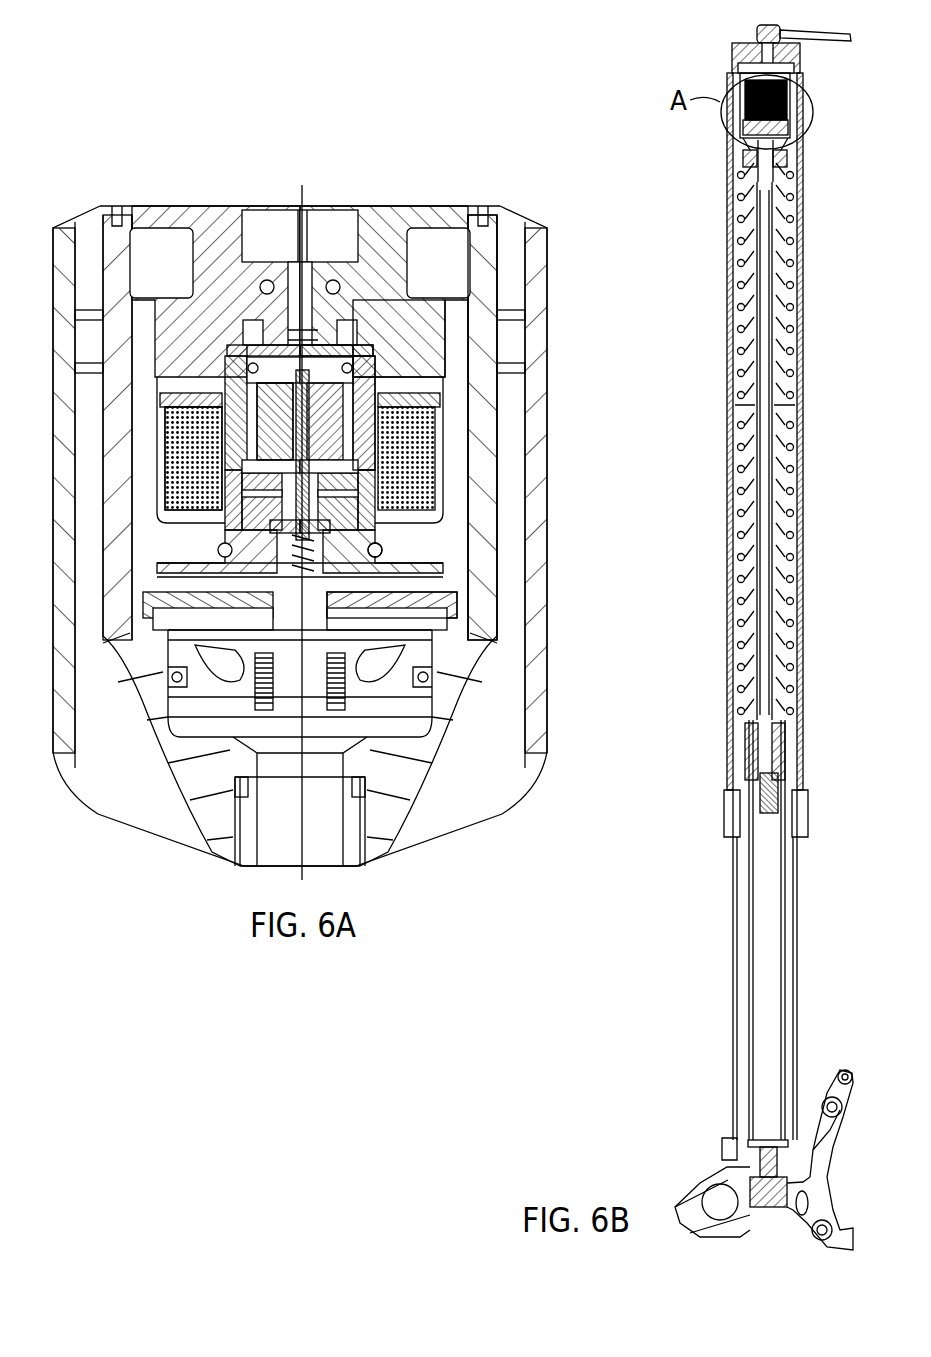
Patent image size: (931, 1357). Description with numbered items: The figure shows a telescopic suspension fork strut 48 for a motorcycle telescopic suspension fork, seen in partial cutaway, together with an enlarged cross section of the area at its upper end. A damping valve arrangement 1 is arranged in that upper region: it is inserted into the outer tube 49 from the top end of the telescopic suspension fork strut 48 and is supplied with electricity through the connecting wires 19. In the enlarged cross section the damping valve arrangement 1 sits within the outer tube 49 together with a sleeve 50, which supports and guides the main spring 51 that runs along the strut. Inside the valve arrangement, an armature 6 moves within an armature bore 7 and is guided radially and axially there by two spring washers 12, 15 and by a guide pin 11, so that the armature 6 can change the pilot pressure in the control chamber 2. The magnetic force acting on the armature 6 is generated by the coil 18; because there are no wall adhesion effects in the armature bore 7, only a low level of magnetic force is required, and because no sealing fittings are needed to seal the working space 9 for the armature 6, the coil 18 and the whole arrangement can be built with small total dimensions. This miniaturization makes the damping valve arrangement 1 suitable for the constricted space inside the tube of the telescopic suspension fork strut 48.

In FIG. 6B, the damping valve arrangement 1 is at (710, 150).
In FIG. 6A, the control chamber 2 is at (440, 612).
In FIG. 6A, the armature 6 is at (372, 392).
In FIG. 6A, the armature bore 7 is at (250, 385).
In FIG. 6A, the working space 9 is at (340, 352).
In FIG. 6A, the guide pin 11 is at (197, 453).
In FIG. 6A, the spring washer 12 is at (367, 548).
In FIG. 6A, the spring washer 15 is at (322, 300).
In FIG. 6A, the coil 18 is at (430, 462).
In FIG. 6B, the connecting wires 19 is at (836, 44).
In FIG. 6B, the telescopic suspension fork strut 48 is at (717, 305).
In FIG. 6A, the outer tube 49 is at (540, 537).
In FIG. 6B, the outer tube 49 is at (803, 205).
In FIG. 6A, the sleeve 50 is at (487, 507).
In FIG. 6B, the main spring 51 is at (797, 268).